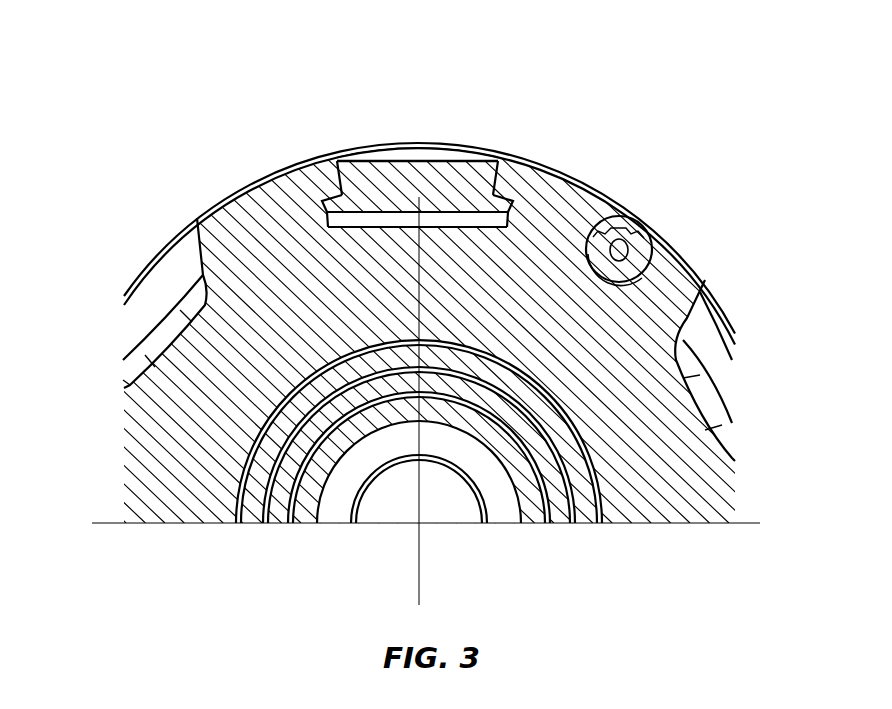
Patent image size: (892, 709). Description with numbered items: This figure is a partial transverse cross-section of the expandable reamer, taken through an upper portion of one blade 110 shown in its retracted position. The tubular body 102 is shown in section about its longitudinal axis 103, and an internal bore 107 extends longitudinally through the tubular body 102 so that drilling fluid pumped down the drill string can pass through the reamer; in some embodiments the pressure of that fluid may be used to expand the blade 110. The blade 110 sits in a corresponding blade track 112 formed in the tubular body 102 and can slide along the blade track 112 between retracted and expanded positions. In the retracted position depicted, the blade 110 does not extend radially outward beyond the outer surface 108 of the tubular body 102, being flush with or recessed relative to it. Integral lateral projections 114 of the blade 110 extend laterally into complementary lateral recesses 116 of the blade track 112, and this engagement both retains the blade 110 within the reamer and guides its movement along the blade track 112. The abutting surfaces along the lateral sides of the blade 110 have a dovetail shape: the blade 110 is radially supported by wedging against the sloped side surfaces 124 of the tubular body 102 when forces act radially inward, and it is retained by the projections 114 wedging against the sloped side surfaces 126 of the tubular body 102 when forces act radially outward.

The tubular body 102 is at (680, 272).
The longitudinal axis 103 is at (412, 528).
The internal bore 107 is at (449, 507).
The outer surface 108 is at (605, 198).
The blade 110 is at (392, 177).
The blade track 112 is at (447, 218).
The lateral projections 114 is at (330, 165).
The lateral recesses 116 is at (328, 205).
The sloped side surfaces 124 is at (350, 160).
The sloped side surfaces 126 is at (347, 224).